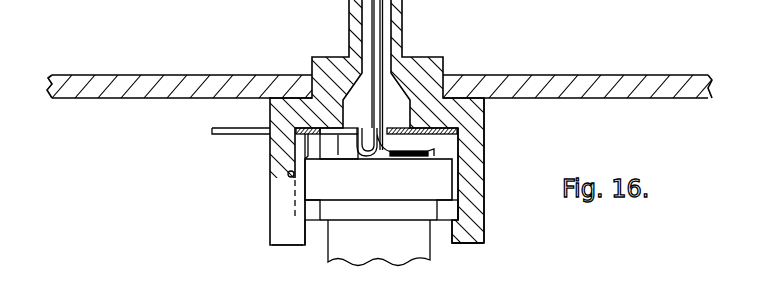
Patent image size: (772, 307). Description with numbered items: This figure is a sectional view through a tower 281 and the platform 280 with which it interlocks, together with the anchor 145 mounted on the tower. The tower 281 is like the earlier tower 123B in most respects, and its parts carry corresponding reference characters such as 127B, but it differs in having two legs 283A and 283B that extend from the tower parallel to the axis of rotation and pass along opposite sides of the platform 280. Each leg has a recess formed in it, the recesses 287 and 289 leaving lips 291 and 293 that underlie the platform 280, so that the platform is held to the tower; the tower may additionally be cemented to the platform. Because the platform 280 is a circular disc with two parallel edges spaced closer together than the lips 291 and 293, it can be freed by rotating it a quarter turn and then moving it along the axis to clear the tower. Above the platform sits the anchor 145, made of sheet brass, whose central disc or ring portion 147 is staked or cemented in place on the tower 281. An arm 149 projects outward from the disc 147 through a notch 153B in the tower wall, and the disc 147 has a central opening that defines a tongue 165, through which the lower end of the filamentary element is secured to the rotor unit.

The tower 123B is at (405, 2).
The tower 281 is at (470, 47).
The hub flange 127B is at (311, 59).
The arm 149 is at (212, 131).
The central disc or ring portion 147 is at (298, 134).
The anchor 145 is at (455, 131).
The recess 287 is at (288, 175).
The notch 153B is at (315, 152).
The leg 283A is at (279, 226).
The lip 291 is at (297, 246).
The tongue 165 is at (384, 150).
The platform 280 is at (417, 211).
The recess 289 is at (455, 181).
The leg 283B is at (486, 217).
The lip 293 is at (444, 236).